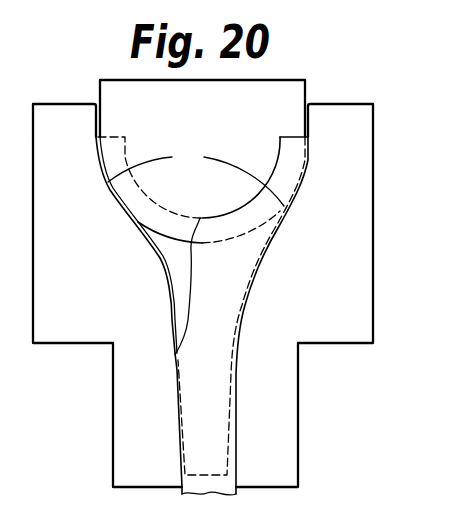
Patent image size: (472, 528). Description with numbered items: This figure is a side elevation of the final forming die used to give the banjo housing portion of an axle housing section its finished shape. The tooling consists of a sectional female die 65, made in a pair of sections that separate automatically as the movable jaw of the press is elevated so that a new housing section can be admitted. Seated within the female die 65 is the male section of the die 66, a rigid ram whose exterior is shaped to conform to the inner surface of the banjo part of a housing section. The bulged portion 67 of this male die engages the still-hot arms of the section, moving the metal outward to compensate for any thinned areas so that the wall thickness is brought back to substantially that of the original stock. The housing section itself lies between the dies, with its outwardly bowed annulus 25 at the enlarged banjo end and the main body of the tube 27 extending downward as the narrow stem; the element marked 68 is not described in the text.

The sectional female die 65 is at (354, 258).
The male section of the die 66 is at (259, 107).
The bulged portion 67 is at (196, 175).
The outwardly bowed annulus 25 is at (250, 237).
The liner wall 68 is at (160, 271).
The main body of the tube 27 is at (217, 370).